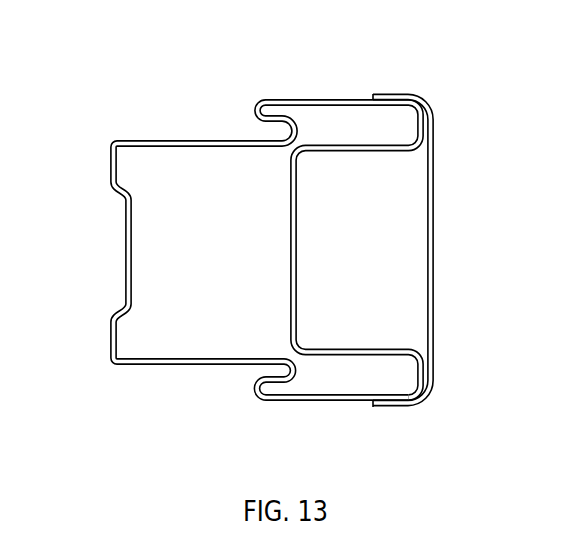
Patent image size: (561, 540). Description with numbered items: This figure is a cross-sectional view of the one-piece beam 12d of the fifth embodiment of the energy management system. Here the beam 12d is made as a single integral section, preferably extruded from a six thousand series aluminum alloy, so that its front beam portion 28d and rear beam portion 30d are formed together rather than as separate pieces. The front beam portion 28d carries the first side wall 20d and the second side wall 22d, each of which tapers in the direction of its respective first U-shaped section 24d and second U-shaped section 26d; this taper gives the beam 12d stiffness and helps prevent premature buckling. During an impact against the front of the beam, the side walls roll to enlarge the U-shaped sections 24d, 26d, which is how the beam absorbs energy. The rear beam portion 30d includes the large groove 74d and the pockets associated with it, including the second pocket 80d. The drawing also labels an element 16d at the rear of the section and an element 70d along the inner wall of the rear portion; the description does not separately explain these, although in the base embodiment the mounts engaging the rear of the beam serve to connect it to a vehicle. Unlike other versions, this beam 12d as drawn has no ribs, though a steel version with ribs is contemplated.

The beam 12d is at (160, 210).
The second panel member 16d is at (436, 213).
The first side wall 20d is at (183, 358).
The second side wall 22d is at (172, 146).
The first U-shaped section 24d is at (289, 391).
The second U-shaped section 26d is at (283, 124).
The front beam portion 28d is at (114, 238).
The rear beam portion 30d is at (352, 414).
The lower inner channel portion 70d is at (348, 370).
The large groove 74d is at (406, 277).
The second pocket 80d is at (335, 128).